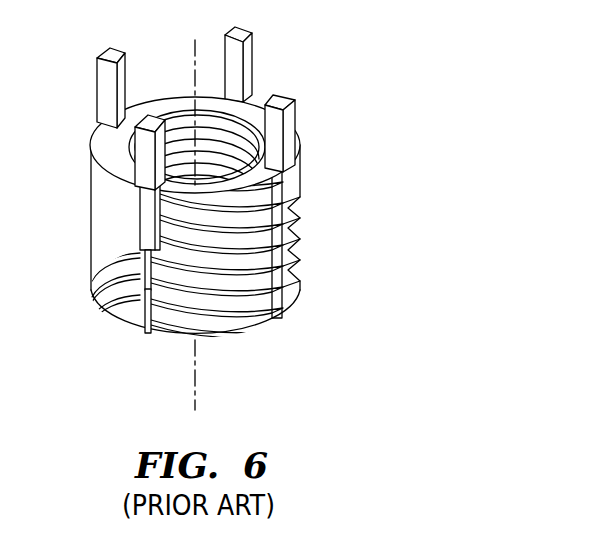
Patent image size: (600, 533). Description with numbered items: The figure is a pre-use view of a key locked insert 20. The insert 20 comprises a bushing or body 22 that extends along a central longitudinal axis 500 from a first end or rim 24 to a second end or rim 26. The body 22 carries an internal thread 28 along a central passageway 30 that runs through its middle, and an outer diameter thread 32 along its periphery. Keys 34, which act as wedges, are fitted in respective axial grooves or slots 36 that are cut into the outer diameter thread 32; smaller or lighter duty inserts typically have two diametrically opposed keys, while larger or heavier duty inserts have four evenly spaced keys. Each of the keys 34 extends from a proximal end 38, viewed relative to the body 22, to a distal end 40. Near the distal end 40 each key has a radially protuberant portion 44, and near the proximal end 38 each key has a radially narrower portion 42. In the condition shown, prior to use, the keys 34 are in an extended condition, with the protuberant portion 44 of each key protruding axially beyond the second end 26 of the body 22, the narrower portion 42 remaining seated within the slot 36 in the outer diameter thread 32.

The key locked insert 20 is at (209, 210).
The body 22 is at (245, 265).
The first end 24 is at (157, 330).
The second end 26 is at (181, 98).
The internal thread 28 is at (247, 137).
The central passageway 30 is at (221, 135).
The outer diameter thread 32 is at (253, 303).
The keys 34 is at (310, 116).
The slots 36 is at (142, 289).
The proximal end 38 is at (147, 256).
The distal end 40 is at (66, 76).
The radially narrower portion 42 is at (142, 222).
The radially protuberant portion 44 is at (91, 98).
The central longitudinal axis 500 is at (197, 398).